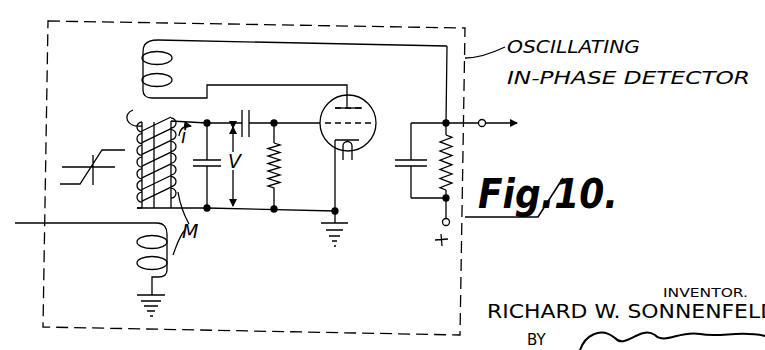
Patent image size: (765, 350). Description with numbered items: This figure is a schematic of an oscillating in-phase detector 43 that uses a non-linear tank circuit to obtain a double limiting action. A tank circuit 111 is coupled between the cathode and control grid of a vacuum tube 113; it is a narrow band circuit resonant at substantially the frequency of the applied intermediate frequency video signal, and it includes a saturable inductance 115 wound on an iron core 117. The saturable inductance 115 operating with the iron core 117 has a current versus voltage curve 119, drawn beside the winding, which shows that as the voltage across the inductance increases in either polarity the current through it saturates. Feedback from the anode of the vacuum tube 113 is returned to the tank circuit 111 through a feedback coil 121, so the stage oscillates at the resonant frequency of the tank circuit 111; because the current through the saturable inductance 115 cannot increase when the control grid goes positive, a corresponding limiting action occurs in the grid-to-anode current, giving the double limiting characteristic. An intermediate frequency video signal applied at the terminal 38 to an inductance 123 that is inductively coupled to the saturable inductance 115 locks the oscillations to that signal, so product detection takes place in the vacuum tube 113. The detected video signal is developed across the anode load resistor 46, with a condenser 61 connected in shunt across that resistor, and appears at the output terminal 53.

The terminal 38 is at (15, 222).
The oscillating in-phase detector 43 is at (270, 22).
The anode load resistor 46 is at (453, 162).
The output terminal 53 is at (484, 120).
The condenser 61 is at (400, 166).
The tank circuit 111 is at (193, 192).
The vacuum tube 113 is at (365, 100).
The saturable inductance 115 is at (128, 109).
The iron core 117 is at (137, 208).
The current versus voltage curve 119 is at (102, 150).
The feedback coil 121 is at (140, 72).
The inductance 123 is at (137, 268).